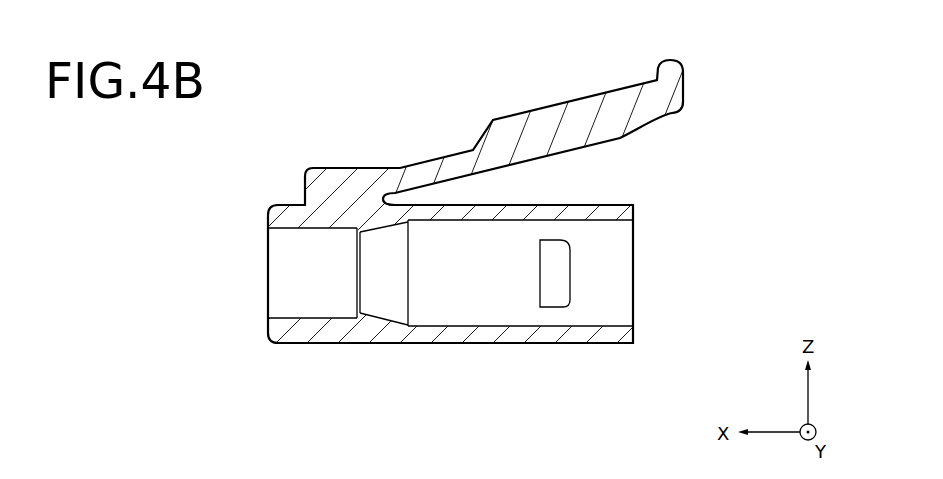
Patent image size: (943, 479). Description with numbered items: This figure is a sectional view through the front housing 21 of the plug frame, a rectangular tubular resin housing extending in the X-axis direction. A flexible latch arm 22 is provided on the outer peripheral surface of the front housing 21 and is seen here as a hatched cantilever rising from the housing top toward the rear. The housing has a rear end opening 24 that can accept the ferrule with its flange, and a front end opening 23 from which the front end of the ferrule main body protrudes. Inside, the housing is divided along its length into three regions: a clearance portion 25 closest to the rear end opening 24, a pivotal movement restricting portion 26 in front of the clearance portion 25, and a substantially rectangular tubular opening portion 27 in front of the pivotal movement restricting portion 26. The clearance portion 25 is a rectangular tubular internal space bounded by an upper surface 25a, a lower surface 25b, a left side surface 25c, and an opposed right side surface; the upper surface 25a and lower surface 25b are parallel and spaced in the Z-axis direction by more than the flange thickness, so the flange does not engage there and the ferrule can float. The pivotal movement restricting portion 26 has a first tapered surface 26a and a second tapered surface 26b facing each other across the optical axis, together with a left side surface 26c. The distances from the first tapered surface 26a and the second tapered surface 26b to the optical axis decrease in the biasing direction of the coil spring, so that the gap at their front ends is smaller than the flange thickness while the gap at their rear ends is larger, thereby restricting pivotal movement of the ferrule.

The front housing 21 is at (272, 338).
The latch arm 22 is at (616, 100).
The front end opening 23 is at (268, 273).
The rear end opening 24 is at (634, 272).
The clearance portion 25 is at (458, 240).
The upper surface 25a is at (565, 205).
The lower surface 25b is at (519, 328).
The left side surface 25c is at (600, 307).
The pivotal movement restricting portion 26 is at (380, 250).
The first tapered surface 26a is at (402, 223).
The second tapered surface 26b is at (388, 318).
The left side surface 26c is at (400, 272).
The opening portion 27 is at (288, 253).